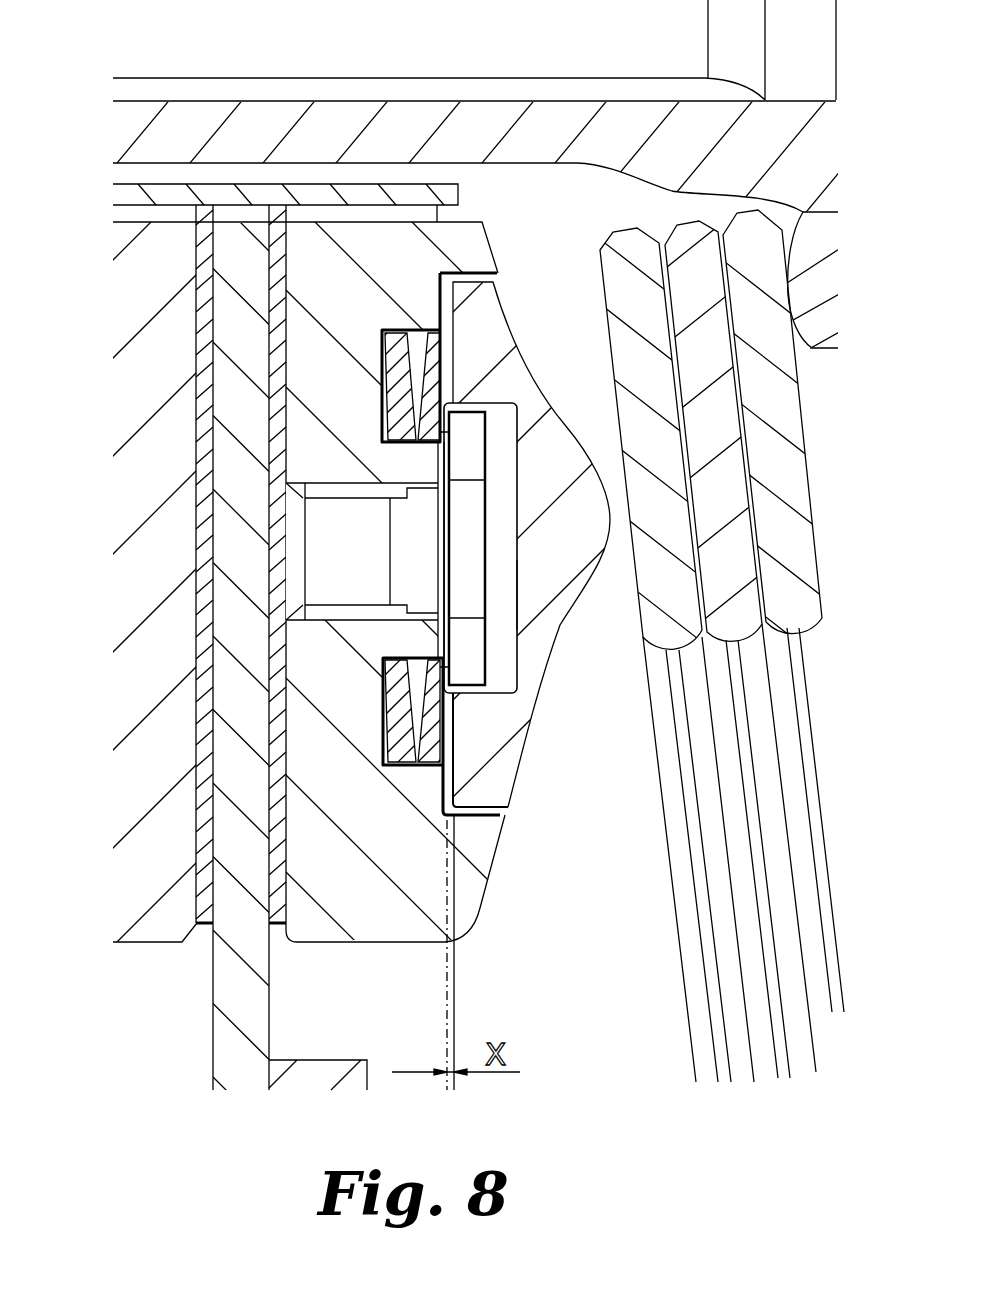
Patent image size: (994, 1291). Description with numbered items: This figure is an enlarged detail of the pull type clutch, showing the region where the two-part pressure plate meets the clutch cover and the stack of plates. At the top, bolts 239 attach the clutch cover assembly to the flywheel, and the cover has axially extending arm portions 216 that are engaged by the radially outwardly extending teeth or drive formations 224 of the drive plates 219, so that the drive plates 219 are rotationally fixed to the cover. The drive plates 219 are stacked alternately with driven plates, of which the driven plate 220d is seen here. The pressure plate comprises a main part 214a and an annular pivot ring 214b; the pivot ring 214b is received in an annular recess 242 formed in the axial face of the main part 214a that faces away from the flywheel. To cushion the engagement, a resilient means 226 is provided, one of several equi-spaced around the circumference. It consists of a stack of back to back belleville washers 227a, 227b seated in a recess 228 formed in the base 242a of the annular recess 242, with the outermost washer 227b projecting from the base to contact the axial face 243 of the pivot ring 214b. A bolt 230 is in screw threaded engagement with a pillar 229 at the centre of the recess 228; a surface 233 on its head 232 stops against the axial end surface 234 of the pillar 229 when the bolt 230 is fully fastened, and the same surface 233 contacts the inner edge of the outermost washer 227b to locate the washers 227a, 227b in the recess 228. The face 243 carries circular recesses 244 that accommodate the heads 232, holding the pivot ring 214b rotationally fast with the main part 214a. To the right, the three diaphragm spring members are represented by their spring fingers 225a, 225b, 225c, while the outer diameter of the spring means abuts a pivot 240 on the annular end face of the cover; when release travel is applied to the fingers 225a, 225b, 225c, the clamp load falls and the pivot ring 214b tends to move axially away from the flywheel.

The bolts 239 is at (264, 54).
The axially extending arm portions 216 is at (199, 154).
The drive formations 224 is at (135, 216).
The drive plates 219 is at (150, 304).
The driven plate 220d is at (242, 405).
The main part 214a is at (435, 258).
The annular pivot ring 214b is at (480, 318).
The base 242a is at (443, 272).
The axial face 243 is at (443, 317).
The annular recess 242 is at (484, 820).
The axial end surface 234 is at (442, 450).
The pillar 229 is at (408, 462).
The bolt 230 is at (313, 560).
The surface 233 is at (443, 648).
The head 232 is at (470, 638).
The circular recesses 244 is at (513, 600).
The recess 228 is at (400, 690).
The belleville washer 227a is at (394, 758).
The outermost washer 227b is at (440, 737).
The resilient means 226 is at (660, 548).
The fingers 225a is at (802, 411).
The fingers 225b is at (740, 431).
The fingers 225c is at (678, 449).
The pivot 240 is at (852, 294).